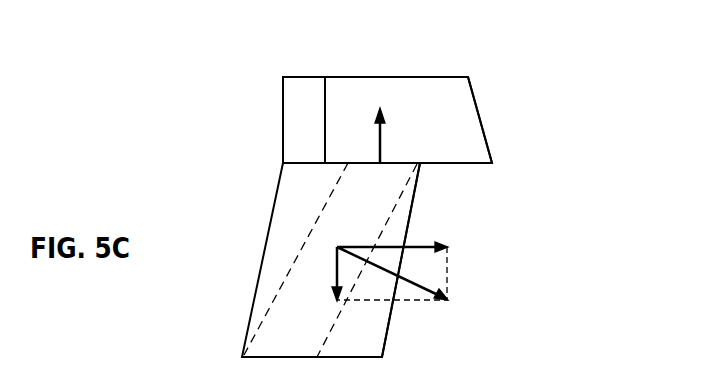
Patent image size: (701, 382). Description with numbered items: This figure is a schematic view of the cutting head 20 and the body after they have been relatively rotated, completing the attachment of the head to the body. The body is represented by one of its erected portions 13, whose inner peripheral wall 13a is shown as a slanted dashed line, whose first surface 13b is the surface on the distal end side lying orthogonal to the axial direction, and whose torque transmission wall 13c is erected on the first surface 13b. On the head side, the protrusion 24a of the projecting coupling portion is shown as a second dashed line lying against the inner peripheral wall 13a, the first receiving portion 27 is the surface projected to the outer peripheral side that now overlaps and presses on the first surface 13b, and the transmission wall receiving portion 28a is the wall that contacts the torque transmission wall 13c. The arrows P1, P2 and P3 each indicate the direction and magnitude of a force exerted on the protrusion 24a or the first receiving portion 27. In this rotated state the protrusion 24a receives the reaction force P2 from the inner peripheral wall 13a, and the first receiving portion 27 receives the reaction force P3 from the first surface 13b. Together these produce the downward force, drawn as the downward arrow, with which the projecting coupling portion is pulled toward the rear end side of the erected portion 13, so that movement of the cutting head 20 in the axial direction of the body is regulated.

The erected portion 13 is at (180, 97).
The inner peripheral wall 13a is at (284, 271).
The first surface 13b is at (341, 163).
The torque transmission wall 13c is at (326, 83).
The cutting head 20 is at (527, 66).
The protrusion 24a is at (378, 214).
The first receiving portion 27 is at (393, 163).
The transmission wall receiving portion 28a is at (327, 131).
The arrow P1 is at (418, 4).
The reaction force P2 is at (409, 288).
The reaction force P3 is at (378, 140).